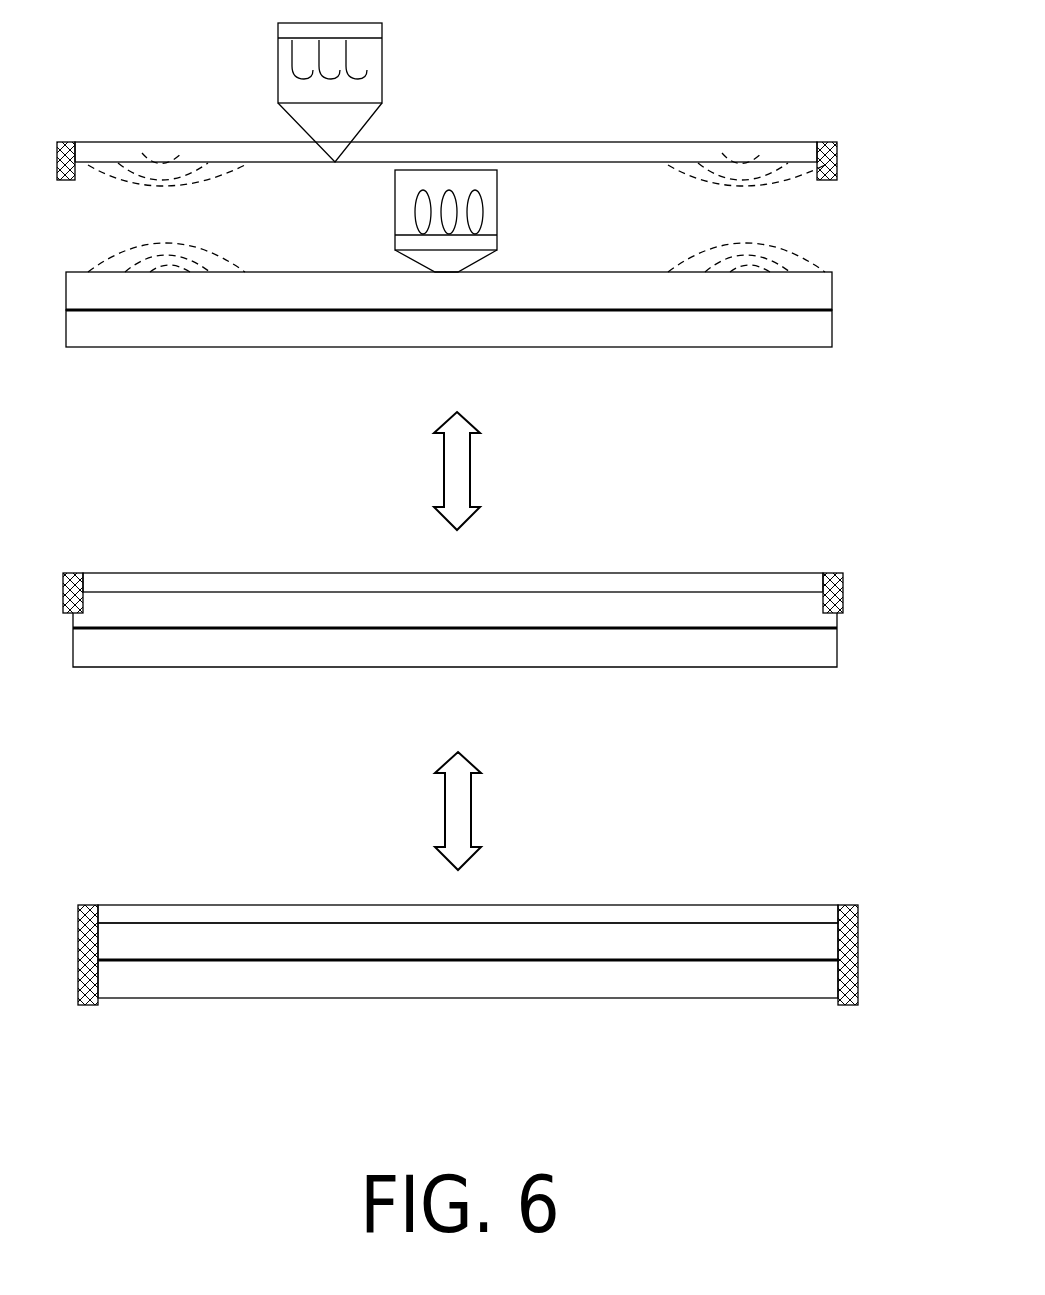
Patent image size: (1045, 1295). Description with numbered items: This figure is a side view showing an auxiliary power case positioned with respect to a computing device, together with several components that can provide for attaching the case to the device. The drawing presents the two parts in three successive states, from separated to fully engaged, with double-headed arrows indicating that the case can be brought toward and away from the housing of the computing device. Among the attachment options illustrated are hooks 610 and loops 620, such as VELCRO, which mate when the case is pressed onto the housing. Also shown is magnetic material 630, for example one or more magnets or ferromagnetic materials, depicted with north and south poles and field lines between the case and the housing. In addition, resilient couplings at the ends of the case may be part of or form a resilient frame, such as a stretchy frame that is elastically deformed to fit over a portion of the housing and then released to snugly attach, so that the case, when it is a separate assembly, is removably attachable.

The hooks 610 is at (415, 51).
The loops 620 is at (382, 220).
The magnetic material 630 is at (124, 214).